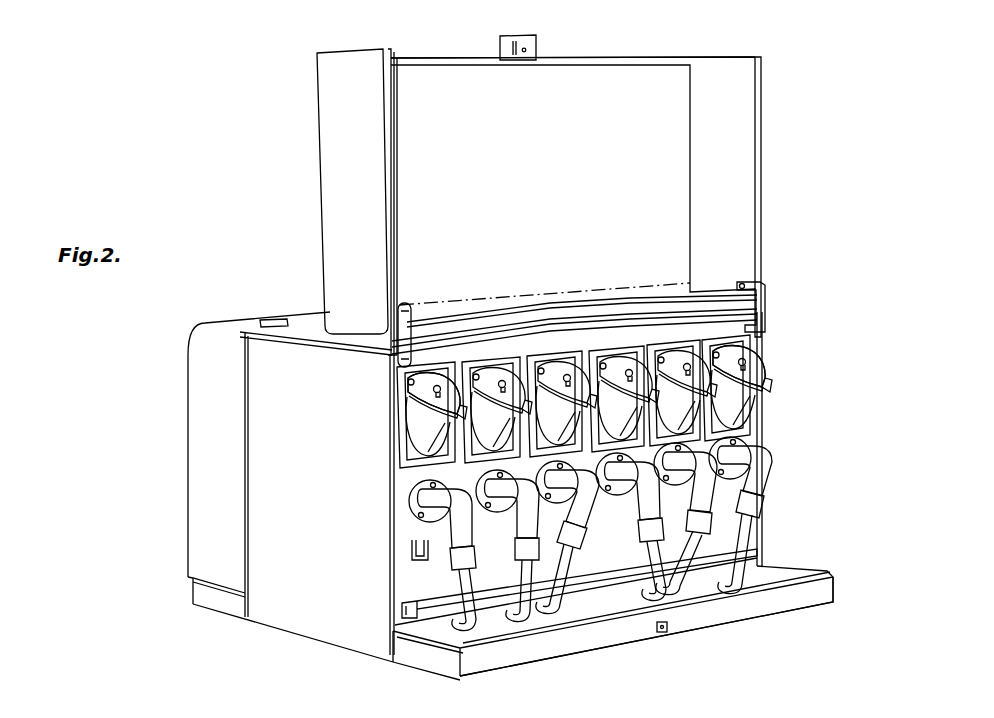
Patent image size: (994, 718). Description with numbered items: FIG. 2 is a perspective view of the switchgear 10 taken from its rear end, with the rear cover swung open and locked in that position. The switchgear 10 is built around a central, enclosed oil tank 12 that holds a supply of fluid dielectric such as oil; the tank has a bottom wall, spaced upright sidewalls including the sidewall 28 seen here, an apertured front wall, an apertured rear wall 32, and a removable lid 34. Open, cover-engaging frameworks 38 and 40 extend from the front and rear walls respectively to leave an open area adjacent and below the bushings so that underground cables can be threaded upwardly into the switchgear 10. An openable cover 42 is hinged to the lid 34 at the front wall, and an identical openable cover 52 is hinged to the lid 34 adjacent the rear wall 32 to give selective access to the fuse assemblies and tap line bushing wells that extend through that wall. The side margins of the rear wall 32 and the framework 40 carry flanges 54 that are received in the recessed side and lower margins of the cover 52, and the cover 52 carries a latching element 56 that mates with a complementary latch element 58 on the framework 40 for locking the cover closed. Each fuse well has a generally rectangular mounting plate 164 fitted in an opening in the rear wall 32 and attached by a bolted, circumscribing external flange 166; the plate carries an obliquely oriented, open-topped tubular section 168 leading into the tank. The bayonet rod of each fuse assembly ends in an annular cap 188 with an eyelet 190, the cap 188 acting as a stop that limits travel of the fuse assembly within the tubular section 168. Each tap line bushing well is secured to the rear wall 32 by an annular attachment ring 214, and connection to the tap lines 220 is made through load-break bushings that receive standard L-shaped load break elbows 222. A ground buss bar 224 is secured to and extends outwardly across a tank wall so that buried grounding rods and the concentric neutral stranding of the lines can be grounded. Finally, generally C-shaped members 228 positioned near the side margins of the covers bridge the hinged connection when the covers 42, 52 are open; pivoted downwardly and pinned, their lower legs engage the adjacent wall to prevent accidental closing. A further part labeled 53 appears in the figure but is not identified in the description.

The switchgear 10 is at (783, 58).
The enclosed oil tank 12 is at (300, 632).
The upright sidewall 28 is at (262, 452).
The apertured rear wall 32 is at (549, 345).
The removable lid 34 is at (318, 332).
The cover-engaging framework 38 is at (205, 598).
The cover-engaging framework 40 is at (822, 602).
The openable cover 42 is at (188, 388).
The openable cover 52 is at (328, 118).
The dispensing panel 53 is at (395, 555).
The flanges 54 is at (630, 610).
The latching element 56 is at (537, 45).
The complementary latch element 58 is at (664, 633).
The mounting plate 164 is at (413, 450).
The circumscribing external flange 166 is at (420, 470).
The tubular section 168 is at (404, 410).
The annular cap 188 is at (760, 368).
The eyelet 190 is at (762, 352).
The annular attachment ring 214 is at (420, 502).
The tap lines 220 is at (750, 536).
The L-shaped load break elbows 222 is at (770, 474).
The ground buss bar 224 is at (603, 582).
The C-shaped members 228 is at (405, 310).